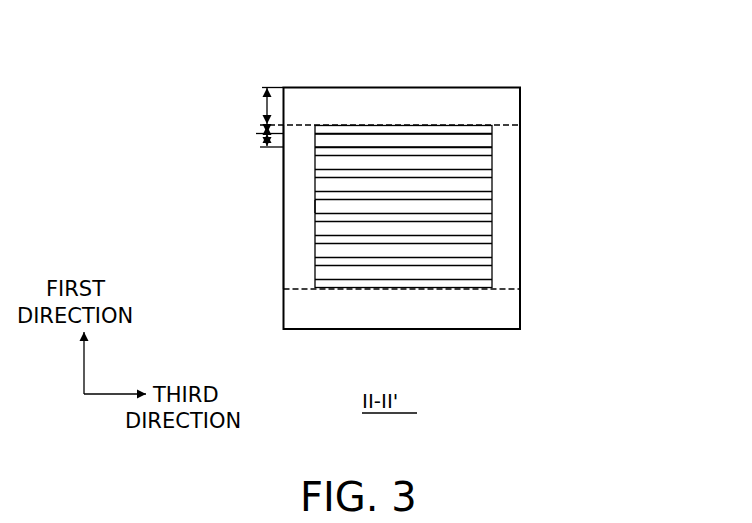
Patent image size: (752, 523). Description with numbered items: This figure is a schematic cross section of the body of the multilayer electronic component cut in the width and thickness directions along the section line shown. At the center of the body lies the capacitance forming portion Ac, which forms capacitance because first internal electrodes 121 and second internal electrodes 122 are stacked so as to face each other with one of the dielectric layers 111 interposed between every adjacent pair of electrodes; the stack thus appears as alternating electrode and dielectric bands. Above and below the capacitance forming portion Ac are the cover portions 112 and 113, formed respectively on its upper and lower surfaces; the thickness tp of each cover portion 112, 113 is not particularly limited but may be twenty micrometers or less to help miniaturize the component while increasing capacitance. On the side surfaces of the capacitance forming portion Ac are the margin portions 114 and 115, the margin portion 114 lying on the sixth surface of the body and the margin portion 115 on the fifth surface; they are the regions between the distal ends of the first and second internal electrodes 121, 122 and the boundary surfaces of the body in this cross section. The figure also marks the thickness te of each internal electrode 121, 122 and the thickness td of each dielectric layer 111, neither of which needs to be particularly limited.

The cover portion 112 is at (407, 98).
The cover portion 113 is at (515, 308).
The margin portion 114 is at (300, 243).
The margin portion 115 is at (515, 232).
The first internal electrode 121 is at (493, 124).
The second internal electrode 122 is at (493, 149).
The dielectric layer 111 is at (492, 135).
The capacitance forming portion Ac is at (314, 210).
The thickness of cover portion tp is at (379, 107).
The thickness of internal electrode te is at (265, 126).
The thickness of dielectric layer td is at (265, 147).